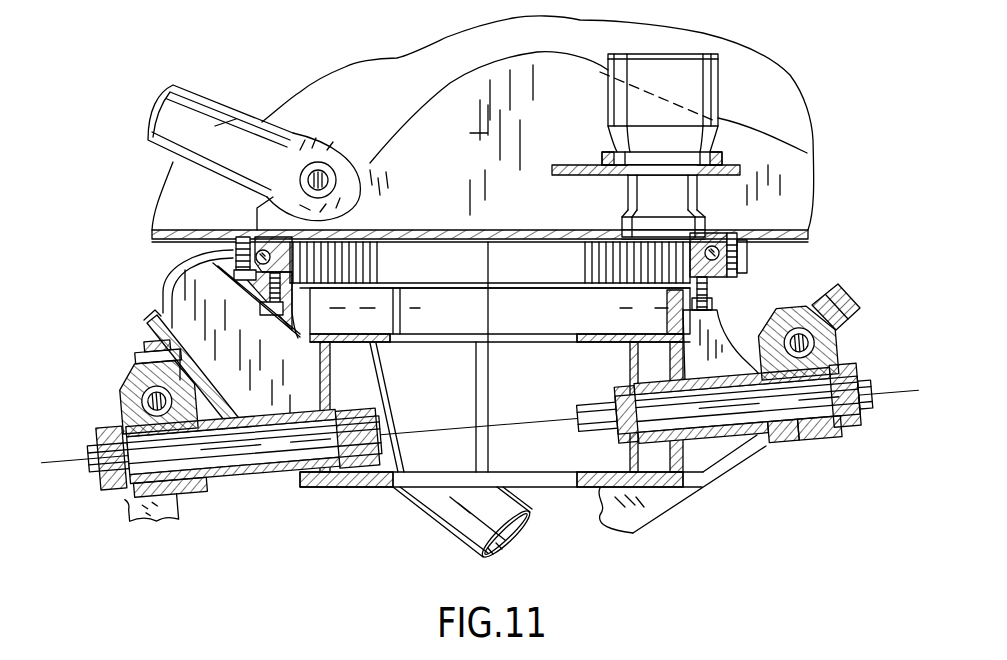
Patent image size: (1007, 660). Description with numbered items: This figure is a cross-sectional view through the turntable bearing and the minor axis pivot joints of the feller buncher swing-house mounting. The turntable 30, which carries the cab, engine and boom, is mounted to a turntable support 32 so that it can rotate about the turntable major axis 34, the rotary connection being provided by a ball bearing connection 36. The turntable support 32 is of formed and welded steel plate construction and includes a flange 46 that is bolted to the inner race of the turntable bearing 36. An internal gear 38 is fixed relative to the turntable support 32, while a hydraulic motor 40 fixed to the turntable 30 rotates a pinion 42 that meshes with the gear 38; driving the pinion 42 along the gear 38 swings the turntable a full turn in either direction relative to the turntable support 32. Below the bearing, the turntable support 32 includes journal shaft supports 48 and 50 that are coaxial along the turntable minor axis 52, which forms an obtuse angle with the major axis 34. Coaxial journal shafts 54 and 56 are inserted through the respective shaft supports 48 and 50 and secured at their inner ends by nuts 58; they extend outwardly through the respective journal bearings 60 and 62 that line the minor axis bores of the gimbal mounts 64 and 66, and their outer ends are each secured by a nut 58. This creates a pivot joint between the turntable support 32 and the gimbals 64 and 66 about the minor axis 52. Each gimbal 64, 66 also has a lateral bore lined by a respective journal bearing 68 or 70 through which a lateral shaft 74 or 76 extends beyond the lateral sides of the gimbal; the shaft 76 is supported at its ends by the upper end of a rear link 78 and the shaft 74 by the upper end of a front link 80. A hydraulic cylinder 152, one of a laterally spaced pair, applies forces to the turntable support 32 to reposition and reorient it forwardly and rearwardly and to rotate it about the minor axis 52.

The turntable 30 is at (150, 234).
The turntable support 32 is at (724, 324).
The turntable major axis 34 is at (480, 133).
The ball bearing connection 36 is at (752, 262).
The internal gear 38 is at (603, 242).
The hydraulic motor 40 is at (718, 100).
The pinion 42 is at (660, 284).
The flange 46 is at (262, 300).
The journal shaft support 48 is at (282, 413).
The journal shaft support 50 is at (624, 384).
The turntable minor axis 52 is at (58, 460).
The journal shaft 54 is at (248, 460).
The journal shaft 56 is at (810, 410).
The nut 58 is at (110, 492).
The journal bearing 60 is at (183, 492).
The journal bearing 62 is at (790, 432).
The gimbal mount 64 is at (117, 383).
The gimbal mount 66 is at (838, 357).
The journal bearing 68 is at (150, 393).
The journal bearing 70 is at (785, 317).
The lateral shaft 74 is at (150, 403).
The lateral shaft 76 is at (844, 303).
The rear link 78 is at (660, 511).
The front link 80 is at (115, 512).
The hydraulic cylinder 152 is at (442, 524).